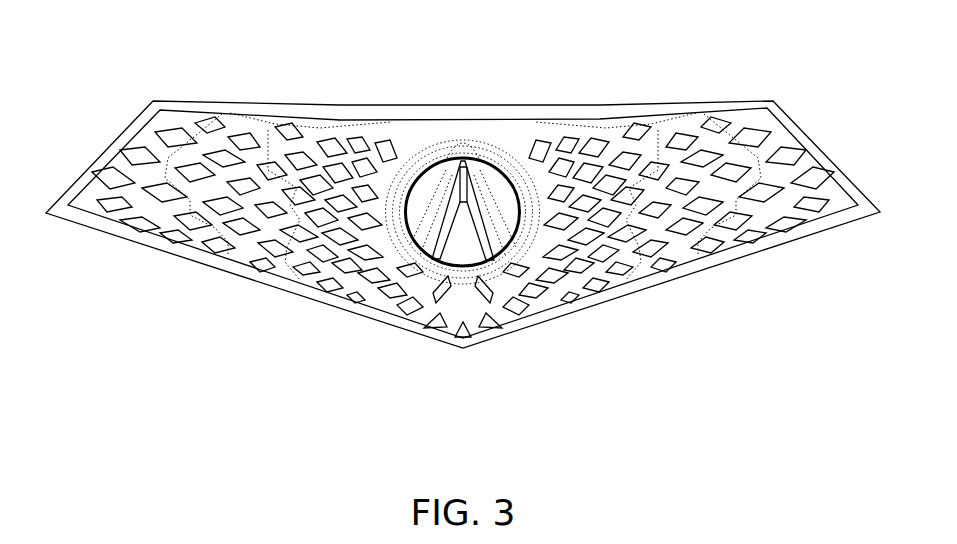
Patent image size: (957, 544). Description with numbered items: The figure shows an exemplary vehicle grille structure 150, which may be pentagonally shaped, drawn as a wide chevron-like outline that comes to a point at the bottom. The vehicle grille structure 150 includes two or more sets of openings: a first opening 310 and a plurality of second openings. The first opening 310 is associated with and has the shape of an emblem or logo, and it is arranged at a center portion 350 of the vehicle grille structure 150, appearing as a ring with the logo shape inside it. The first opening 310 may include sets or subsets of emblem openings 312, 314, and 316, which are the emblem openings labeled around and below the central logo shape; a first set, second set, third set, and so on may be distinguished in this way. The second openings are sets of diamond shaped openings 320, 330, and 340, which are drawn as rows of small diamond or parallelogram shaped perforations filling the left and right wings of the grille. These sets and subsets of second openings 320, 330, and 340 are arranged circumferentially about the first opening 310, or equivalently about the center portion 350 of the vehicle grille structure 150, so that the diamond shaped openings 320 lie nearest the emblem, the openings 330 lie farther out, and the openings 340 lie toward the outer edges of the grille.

The vehicle grille structure 150 is at (193, 100).
The first opening 310 is at (463, 158).
The emblem openings 312 is at (437, 162).
The emblem openings 314 is at (418, 163).
The emblem openings 316 is at (452, 230).
The second openings 320 is at (393, 267).
The second openings 330 is at (280, 272).
The second openings 340 is at (190, 202).
The center portion 350 is at (485, 142).